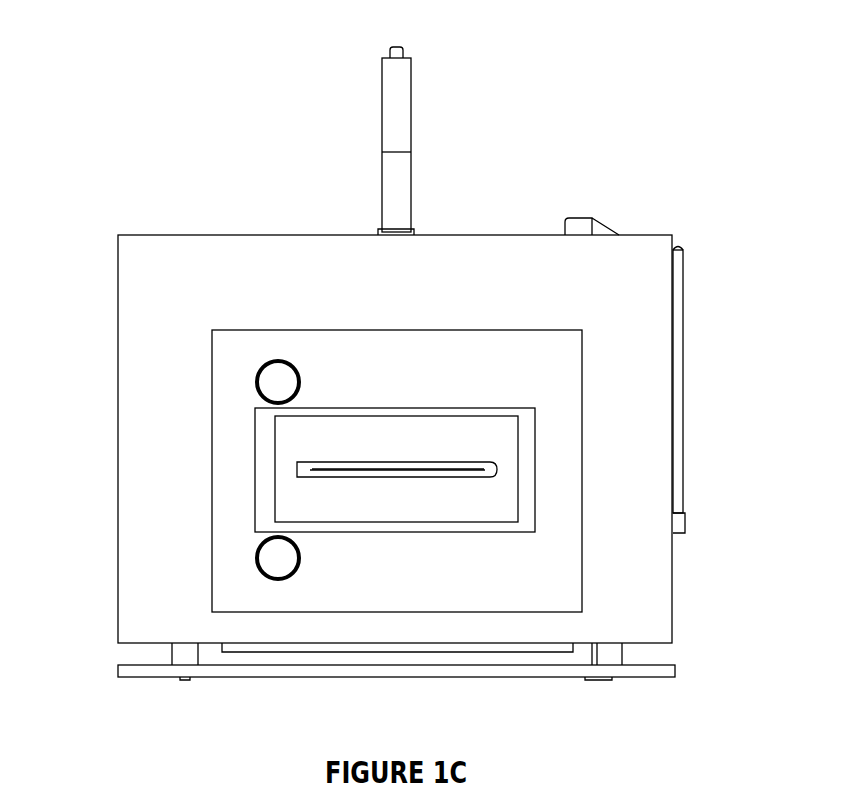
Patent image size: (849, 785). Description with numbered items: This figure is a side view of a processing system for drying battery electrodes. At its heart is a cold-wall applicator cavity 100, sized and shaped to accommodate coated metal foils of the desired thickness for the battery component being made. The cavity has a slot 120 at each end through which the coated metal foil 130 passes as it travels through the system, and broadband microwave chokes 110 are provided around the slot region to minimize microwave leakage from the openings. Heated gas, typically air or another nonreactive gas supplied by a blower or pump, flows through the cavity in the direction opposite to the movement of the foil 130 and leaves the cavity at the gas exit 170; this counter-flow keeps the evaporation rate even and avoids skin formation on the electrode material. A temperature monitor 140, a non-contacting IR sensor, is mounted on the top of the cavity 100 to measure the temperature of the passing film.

The cold-wall applicator cavity 100 is at (497, 233).
The broadband microwave chokes 110 is at (492, 435).
The slot 120 is at (500, 468).
The metal foil 130 is at (360, 465).
The temperature monitor 140 is at (405, 43).
The gas exit 170 is at (262, 362).